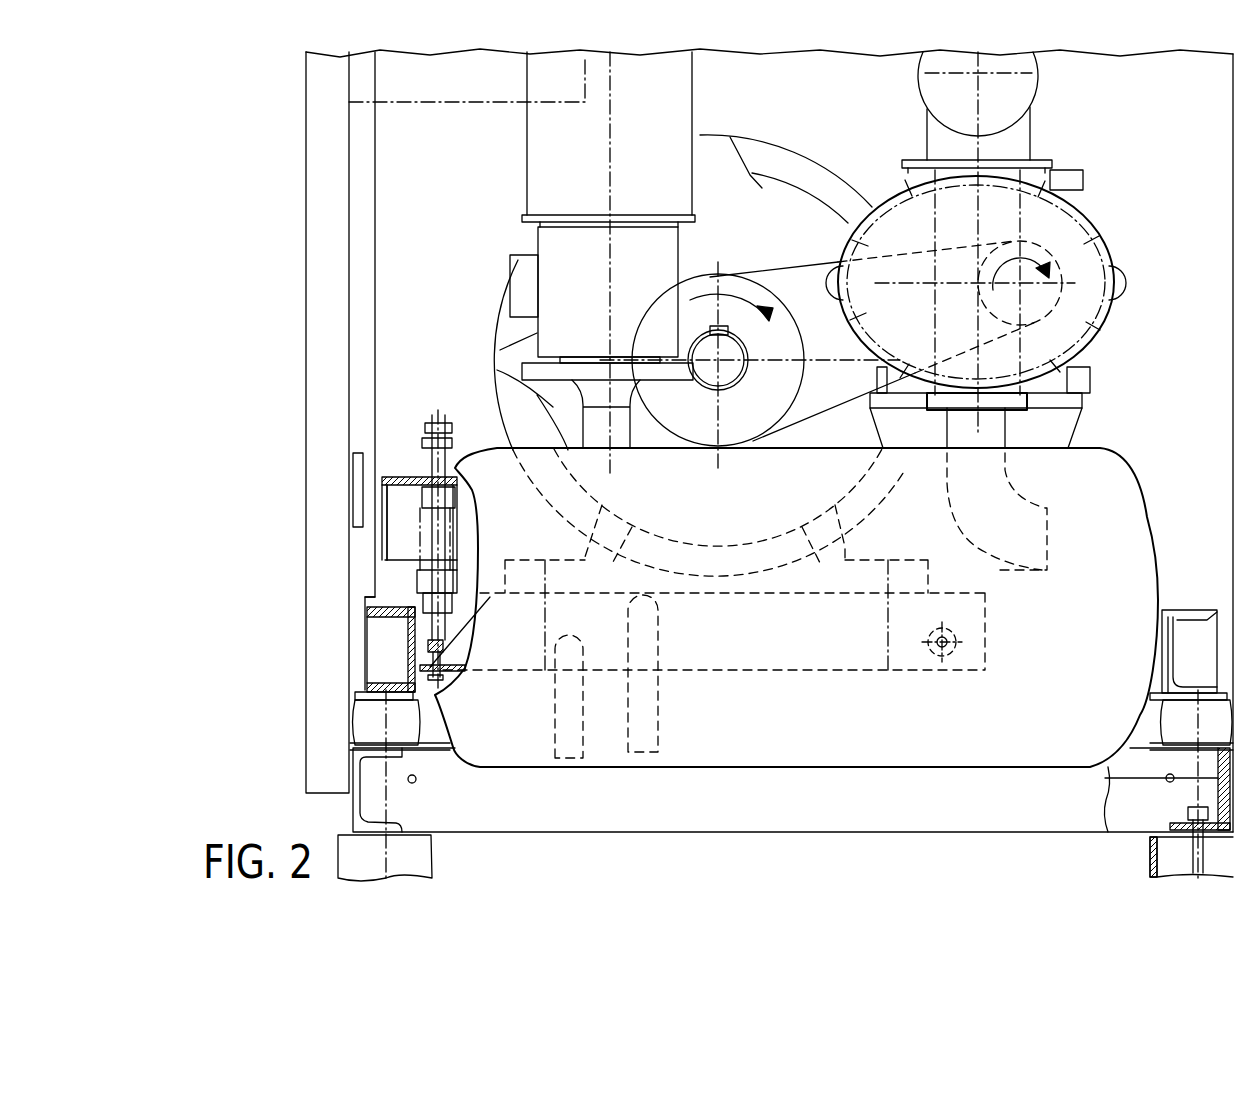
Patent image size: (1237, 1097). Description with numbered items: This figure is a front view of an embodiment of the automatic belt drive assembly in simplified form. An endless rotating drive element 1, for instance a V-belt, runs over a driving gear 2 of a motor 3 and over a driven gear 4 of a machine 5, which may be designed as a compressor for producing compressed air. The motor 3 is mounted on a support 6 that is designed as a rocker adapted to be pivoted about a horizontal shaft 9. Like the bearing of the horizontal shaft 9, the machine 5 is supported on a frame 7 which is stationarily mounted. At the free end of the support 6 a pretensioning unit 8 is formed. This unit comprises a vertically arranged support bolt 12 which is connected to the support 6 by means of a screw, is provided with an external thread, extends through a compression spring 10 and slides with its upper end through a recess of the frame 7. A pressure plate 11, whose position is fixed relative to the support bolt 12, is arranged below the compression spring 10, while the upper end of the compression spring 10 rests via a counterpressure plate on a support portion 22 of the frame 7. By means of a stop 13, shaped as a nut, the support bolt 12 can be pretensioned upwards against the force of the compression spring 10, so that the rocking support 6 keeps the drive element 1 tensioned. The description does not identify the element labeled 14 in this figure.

The drive element 1 is at (805, 237).
The driving gear 2 is at (745, 410).
The motor 3 is at (770, 212).
The driven gear 4 is at (1043, 303).
The machine 5 is at (1063, 240).
The support 6 is at (817, 642).
The frame 7 is at (832, 798).
The pretensioning unit 8 is at (393, 570).
The horizontal shaft 9 is at (980, 632).
The compression spring 10 is at (400, 560).
The pressure plate 11 is at (400, 592).
The support bolt 12 is at (440, 545).
The stop 13 is at (425, 442).
The vibration damper bracket 14 is at (363, 616).
The support portion 22 is at (385, 477).